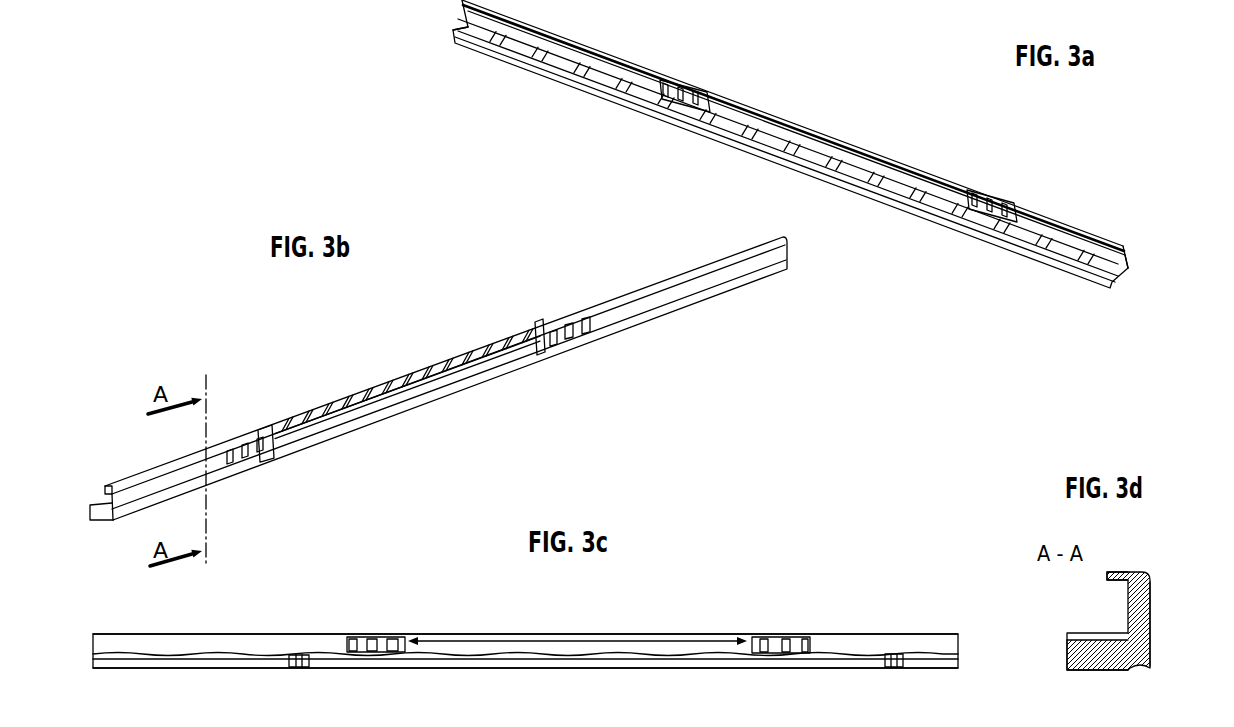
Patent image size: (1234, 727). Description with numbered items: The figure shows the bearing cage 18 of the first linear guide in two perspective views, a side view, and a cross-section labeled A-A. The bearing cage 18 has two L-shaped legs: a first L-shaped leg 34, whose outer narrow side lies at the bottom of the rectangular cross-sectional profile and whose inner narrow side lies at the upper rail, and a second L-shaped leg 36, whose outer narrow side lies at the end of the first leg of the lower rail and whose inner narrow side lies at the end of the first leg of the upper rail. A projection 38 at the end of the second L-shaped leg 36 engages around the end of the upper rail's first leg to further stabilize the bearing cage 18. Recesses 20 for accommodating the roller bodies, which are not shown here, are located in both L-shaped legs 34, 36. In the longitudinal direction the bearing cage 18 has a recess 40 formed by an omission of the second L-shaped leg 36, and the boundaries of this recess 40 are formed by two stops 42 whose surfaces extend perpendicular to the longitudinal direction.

In FIG. 3b, the bearing cage 18 is at (621, 280).
In FIG. 3c, the bearing cage 18 is at (525, 651).
In FIG. 3d, the bearing cage 18 is at (1150, 665).
In FIG. 3a, the recesses 20 is at (692, 91).
In FIG. 3b, the recesses 20 is at (261, 453).
In FIG. 3c, the recesses 20 is at (392, 637).
In FIG. 3a, the first L-shaped leg 34 is at (1128, 283).
In FIG. 3b, the first L-shaped leg 34 is at (100, 521).
In FIG. 3c, the first L-shaped leg 34 is at (113, 669).
In FIG. 3d, the first L-shaped leg 34 is at (1092, 672).
In FIG. 3a, the second L-shaped leg 36 is at (1130, 255).
In FIG. 3b, the second L-shaped leg 36 is at (137, 504).
In FIG. 3c, the second L-shaped leg 36 is at (118, 641).
In FIG. 3d, the second L-shaped leg 36 is at (1152, 612).
In FIG. 3a, the projection 38 is at (1068, 233).
In FIG. 3b, the projection 38 is at (105, 487).
In FIG. 3c, the projection 38 is at (880, 634).
In FIG. 3d, the projection 38 is at (1123, 571).
In FIG. 3a, the recess 40 is at (832, 146).
In FIG. 3b, the recess 40 is at (398, 392).
In FIG. 3c, the recess 40 is at (570, 640).
In FIG. 3a, the stops 42 is at (720, 102).
In FIG. 3b, the stops 42 is at (274, 430).
In FIG. 3c, the stops 42 is at (403, 635).